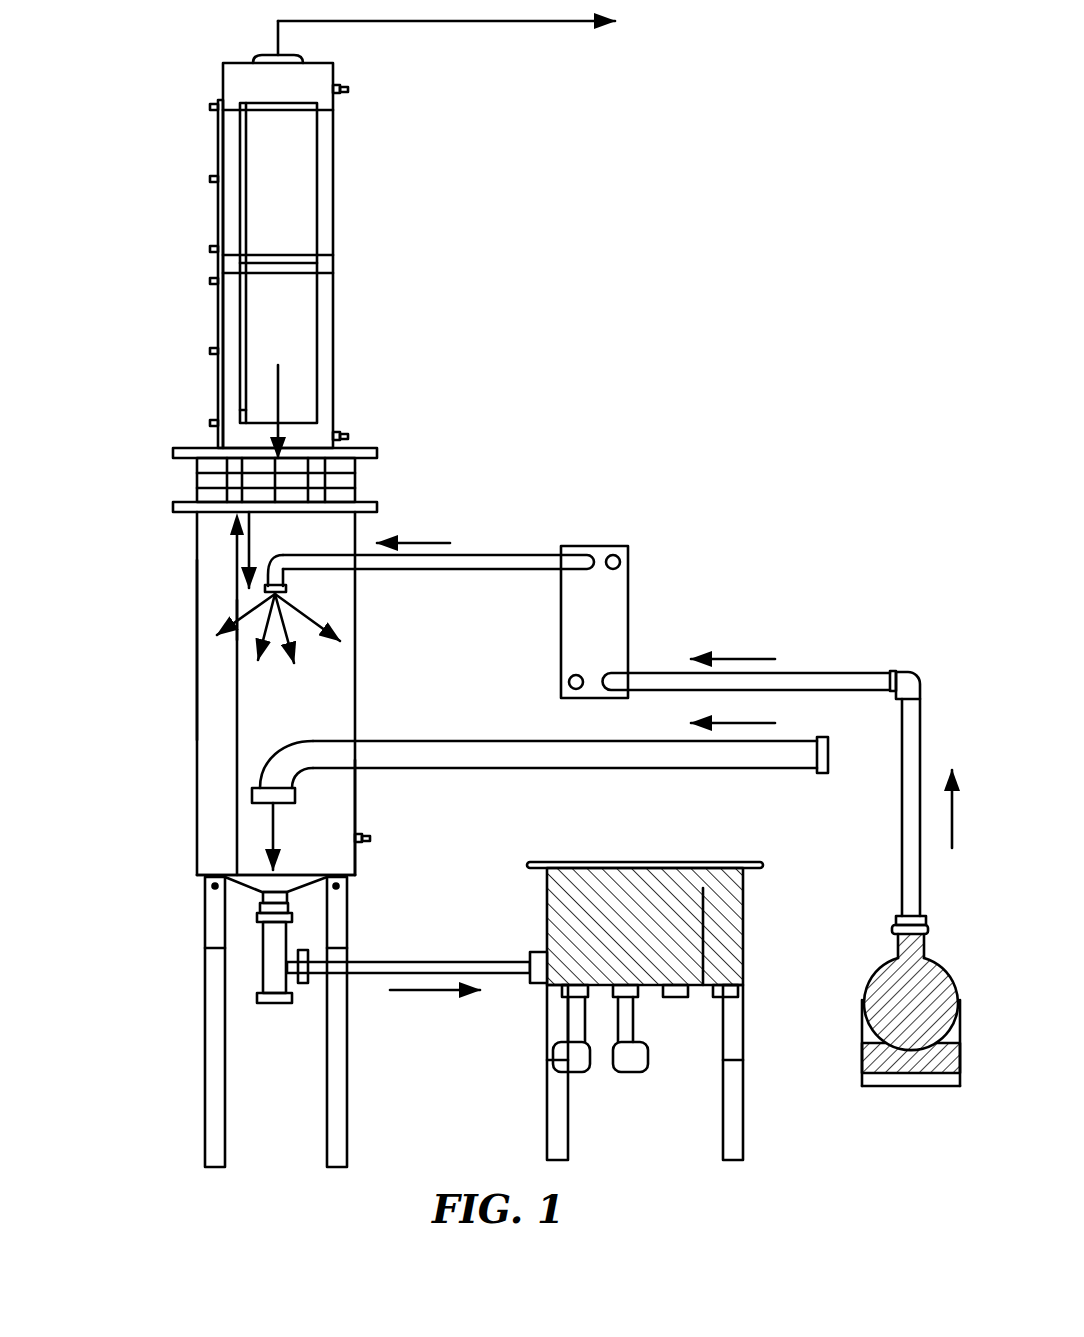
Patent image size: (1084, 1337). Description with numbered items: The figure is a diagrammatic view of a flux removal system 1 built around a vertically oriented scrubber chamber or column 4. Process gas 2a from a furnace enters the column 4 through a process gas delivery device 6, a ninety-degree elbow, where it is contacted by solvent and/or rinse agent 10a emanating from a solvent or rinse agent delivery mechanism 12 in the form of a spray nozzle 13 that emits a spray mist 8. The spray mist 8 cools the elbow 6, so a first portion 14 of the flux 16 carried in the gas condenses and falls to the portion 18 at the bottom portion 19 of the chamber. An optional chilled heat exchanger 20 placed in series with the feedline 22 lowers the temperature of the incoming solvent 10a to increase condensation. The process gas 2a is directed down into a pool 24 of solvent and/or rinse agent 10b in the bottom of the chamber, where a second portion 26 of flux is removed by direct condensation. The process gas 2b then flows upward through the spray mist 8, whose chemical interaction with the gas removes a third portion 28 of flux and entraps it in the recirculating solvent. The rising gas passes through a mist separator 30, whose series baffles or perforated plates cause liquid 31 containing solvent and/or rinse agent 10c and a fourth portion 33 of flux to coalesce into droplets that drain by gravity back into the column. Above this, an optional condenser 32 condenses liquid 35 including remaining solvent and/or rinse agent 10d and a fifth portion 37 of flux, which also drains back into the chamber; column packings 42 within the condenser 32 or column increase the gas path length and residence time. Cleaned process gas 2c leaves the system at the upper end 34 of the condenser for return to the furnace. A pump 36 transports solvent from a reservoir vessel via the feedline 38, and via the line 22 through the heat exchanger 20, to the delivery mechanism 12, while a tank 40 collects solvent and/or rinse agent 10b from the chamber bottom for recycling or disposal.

The flux removal system 1 is at (832, 292).
The process gas 2a is at (262, 815).
The process gas 2b is at (237, 686).
The cleaned process gas 2c is at (475, 22).
The scrubber chamber 4 is at (197, 730).
The process gas delivery device 6 is at (260, 772).
The spray mist 8 is at (213, 636).
The solvent or rinse agent 10a is at (220, 625).
The solvent or rinse agent 10b is at (300, 882).
The solvent or rinse agent 10c is at (253, 540).
The solvent or rinse agent 10d is at (220, 430).
The solvent or rinse agent delivery mechanism 12 is at (285, 578).
The spray nozzle 13 is at (285, 590).
The first portion of flux 14 is at (297, 800).
The flux 16 is at (273, 835).
The portion of the scrubber chamber 18 is at (232, 882).
The bottom portion 19 is at (277, 893).
The chilled heat exchanger 20 is at (628, 610).
The feedline 22 is at (477, 553).
The pool 24 is at (235, 887).
The second portion of flux 26 is at (240, 879).
The third portion of flux 28 is at (237, 562).
The mist separator 30 is at (213, 480).
The liquid 31 is at (250, 528).
The condenser 32 is at (218, 322).
The fourth portion of flux 33 is at (253, 557).
The upper end 34 is at (270, 58).
The liquid 35 is at (220, 407).
The pump 36 is at (874, 980).
The fifth portion of flux 37 is at (240, 440).
The feedline 38 is at (836, 673).
The tank 40 is at (643, 862).
The column packings 42 is at (292, 312).